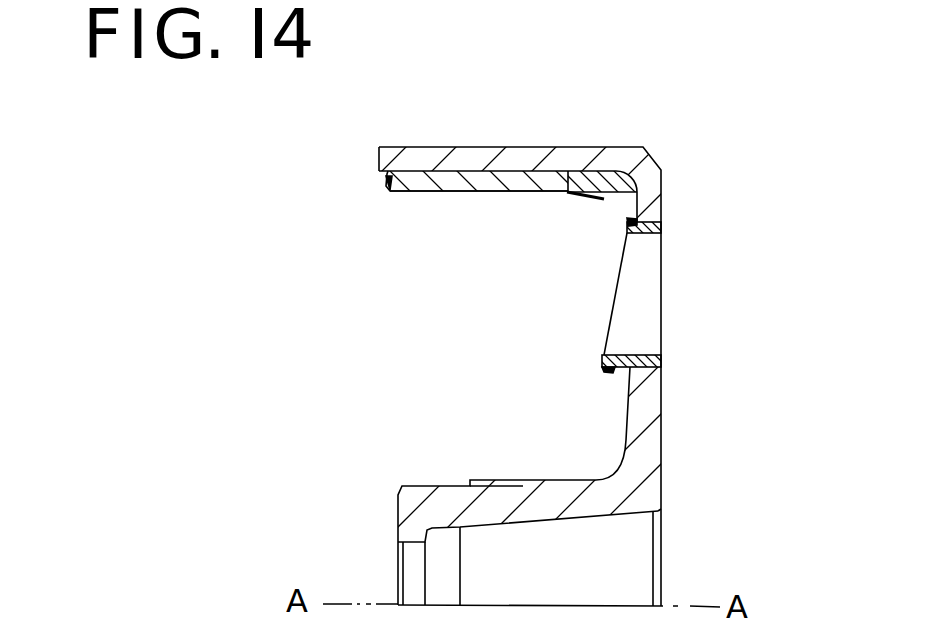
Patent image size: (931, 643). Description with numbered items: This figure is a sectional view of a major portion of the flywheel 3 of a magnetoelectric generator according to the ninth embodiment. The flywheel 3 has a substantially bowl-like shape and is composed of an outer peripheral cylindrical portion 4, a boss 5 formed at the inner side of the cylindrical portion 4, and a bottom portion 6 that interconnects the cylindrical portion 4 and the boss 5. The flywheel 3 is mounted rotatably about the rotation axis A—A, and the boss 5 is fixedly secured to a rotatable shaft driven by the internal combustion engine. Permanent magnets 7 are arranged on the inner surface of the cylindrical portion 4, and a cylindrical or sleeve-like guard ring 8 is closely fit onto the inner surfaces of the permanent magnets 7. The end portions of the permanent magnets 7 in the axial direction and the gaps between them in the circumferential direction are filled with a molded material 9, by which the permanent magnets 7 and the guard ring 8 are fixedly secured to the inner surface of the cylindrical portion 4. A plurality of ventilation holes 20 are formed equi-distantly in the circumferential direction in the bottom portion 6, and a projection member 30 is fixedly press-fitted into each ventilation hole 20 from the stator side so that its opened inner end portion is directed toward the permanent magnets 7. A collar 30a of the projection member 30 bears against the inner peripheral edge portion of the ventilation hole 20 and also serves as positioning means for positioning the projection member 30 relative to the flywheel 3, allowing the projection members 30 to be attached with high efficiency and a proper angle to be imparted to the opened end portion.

The flywheel 3 is at (689, 186).
The outer peripheral cylindrical portion 4 is at (532, 166).
The boss 5 is at (568, 497).
The bottom portion 6 is at (662, 427).
The permanent magnets 7 is at (505, 182).
The guard ring 8 is at (431, 193).
The molded material 9 is at (600, 178).
The ventilation hole 20 is at (648, 349).
The projection member 30 is at (648, 233).
The collar 30a is at (613, 371).